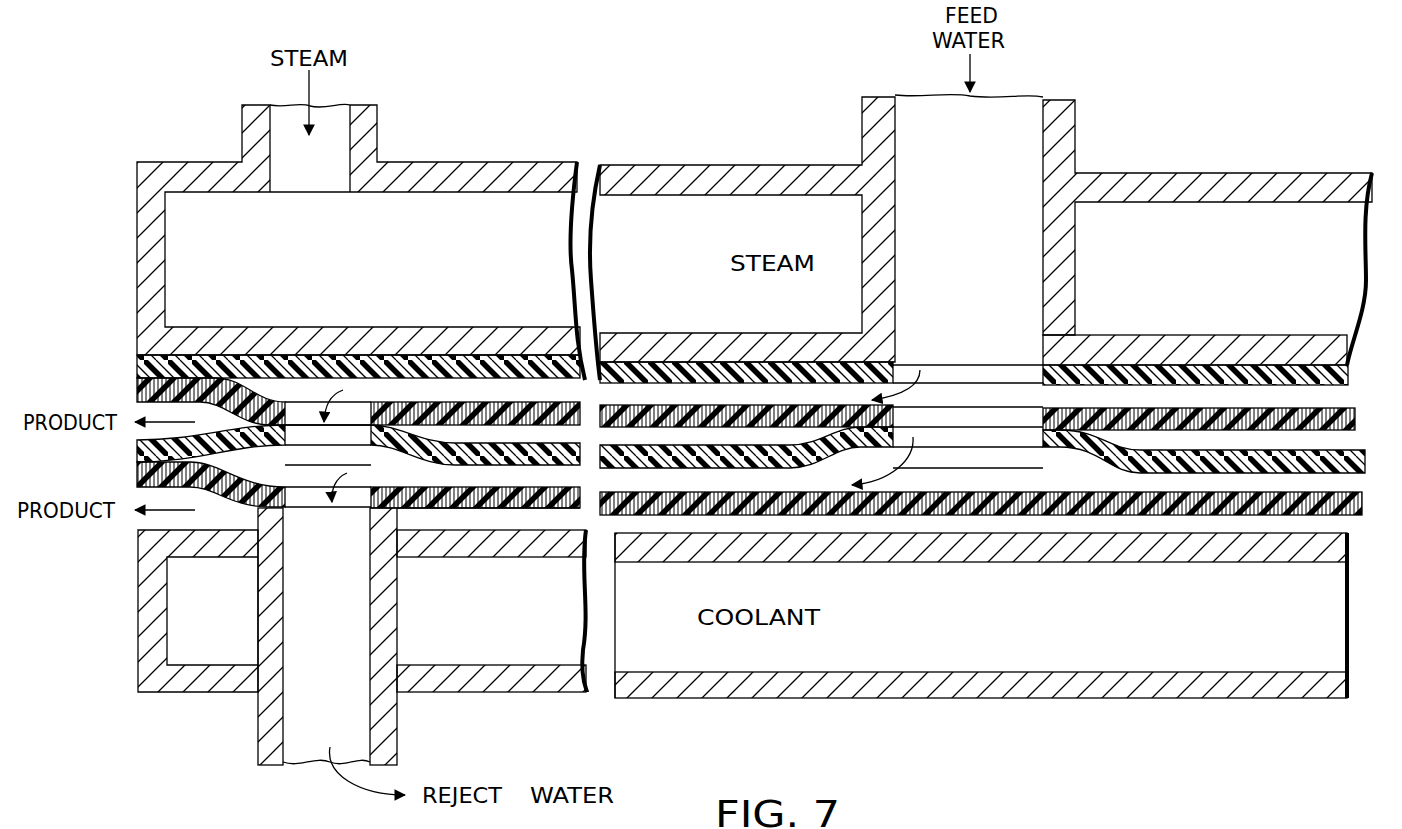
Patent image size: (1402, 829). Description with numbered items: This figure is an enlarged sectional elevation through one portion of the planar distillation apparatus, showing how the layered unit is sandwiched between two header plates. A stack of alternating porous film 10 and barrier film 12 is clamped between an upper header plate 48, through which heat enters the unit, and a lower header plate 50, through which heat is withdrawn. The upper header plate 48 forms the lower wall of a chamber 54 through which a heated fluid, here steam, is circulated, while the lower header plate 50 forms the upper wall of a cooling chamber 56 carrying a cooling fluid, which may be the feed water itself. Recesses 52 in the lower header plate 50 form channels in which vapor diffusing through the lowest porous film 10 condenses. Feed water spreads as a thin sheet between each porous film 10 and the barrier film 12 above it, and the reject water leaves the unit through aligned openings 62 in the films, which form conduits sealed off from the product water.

The porous film 10 is at (140, 390).
The barrier film 12 is at (155, 363).
The upper header plate 48 is at (1168, 345).
The lower header plate 50 is at (953, 543).
The recesses 52 is at (717, 523).
The chamber 54 is at (1162, 281).
The cooling chamber 56 is at (927, 643).
The openings 62 is at (283, 537).